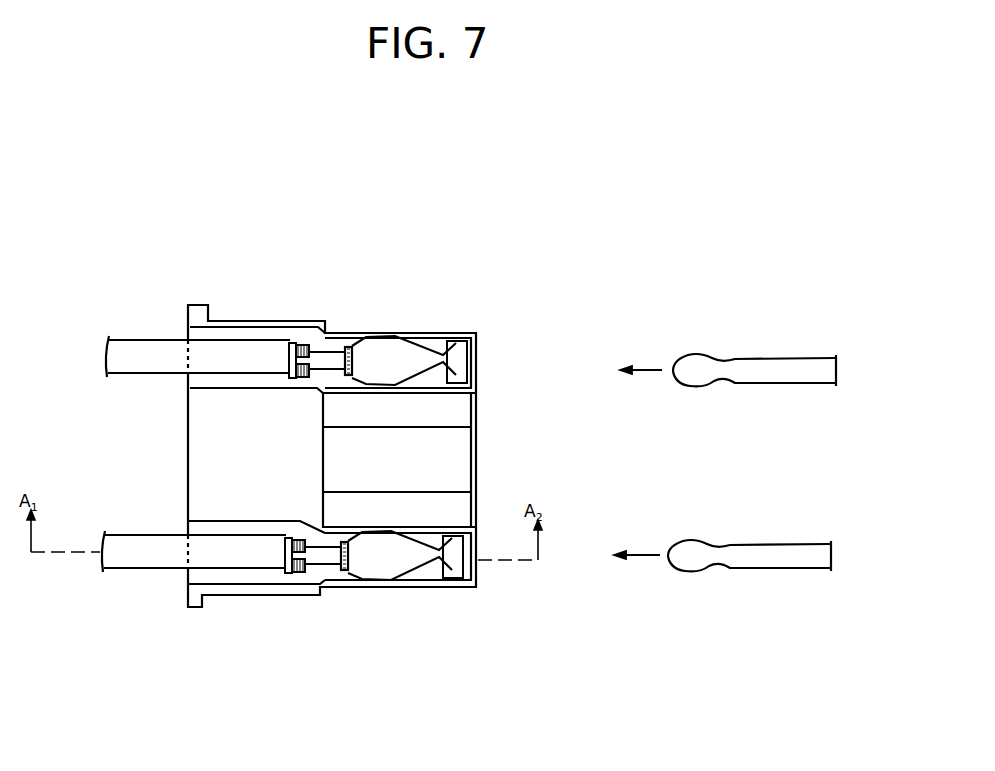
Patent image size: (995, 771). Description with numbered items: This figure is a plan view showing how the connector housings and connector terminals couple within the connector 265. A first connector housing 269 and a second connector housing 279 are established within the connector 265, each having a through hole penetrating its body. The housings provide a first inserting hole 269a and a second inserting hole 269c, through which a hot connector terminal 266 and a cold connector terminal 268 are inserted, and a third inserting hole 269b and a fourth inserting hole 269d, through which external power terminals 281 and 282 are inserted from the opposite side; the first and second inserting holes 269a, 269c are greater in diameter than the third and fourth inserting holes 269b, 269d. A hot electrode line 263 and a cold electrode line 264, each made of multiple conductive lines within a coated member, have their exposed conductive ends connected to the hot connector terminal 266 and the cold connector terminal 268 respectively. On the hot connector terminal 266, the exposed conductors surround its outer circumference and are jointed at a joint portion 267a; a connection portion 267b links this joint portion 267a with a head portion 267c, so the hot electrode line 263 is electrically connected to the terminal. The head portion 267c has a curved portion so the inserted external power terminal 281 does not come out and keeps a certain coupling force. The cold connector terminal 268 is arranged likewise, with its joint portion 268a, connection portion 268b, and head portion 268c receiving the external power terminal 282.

The hot electrode line 263 is at (135, 570).
The cold electrode line 264 is at (147, 338).
The connector 265 is at (353, 321).
The hot connector terminal 266 is at (385, 572).
The joint portion 267a is at (283, 574).
The connection portion 267b is at (320, 568).
The head portion 267c is at (452, 578).
The cold connector terminal 268 is at (394, 336).
The joint portion 268a is at (267, 320).
The connection portion 268b is at (300, 342).
The head portion 268c is at (450, 336).
The first connector housing 269 is at (187, 614).
The first inserting hole 269a is at (181, 533).
The third inserting hole 269b is at (480, 566).
The second inserting hole 269c is at (187, 375).
The fourth inserting hole 269d is at (484, 360).
The second connector housing 279 is at (197, 298).
The external power terminal 281 is at (773, 568).
The external power terminal 282 is at (780, 360).